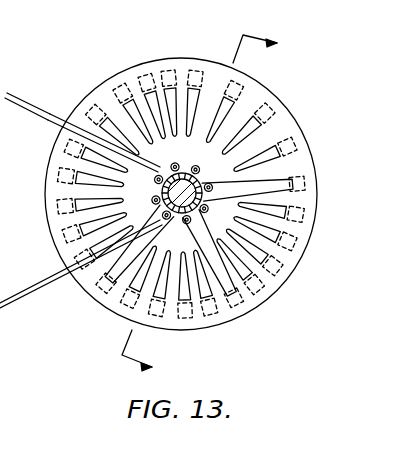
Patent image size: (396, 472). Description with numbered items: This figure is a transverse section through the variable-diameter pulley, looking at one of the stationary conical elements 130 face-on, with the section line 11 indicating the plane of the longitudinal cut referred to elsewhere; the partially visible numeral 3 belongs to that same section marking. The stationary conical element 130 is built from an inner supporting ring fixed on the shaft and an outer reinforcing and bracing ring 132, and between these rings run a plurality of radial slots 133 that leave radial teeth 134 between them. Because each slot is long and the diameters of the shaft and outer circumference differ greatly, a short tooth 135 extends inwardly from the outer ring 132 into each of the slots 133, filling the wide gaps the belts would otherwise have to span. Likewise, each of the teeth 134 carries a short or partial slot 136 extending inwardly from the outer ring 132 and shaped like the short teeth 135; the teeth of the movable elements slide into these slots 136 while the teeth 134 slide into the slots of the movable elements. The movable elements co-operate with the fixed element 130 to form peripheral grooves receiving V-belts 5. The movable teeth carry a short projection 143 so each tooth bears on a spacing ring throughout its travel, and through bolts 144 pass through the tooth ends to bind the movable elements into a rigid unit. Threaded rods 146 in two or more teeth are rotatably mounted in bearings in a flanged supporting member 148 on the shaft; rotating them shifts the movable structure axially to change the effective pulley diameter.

The stationary conical element 130 is at (104, 79).
The outer reinforcing and bracing ring 132 is at (126, 80).
The radial slots 133 is at (205, 160).
The radial teeth 134 is at (236, 216).
The short tooth 135 is at (182, 172).
The short or partial slots 136 is at (176, 312).
The short projection 143 is at (112, 286).
The through bolts 144 is at (225, 196).
The threaded rods 146 is at (212, 178).
The flanged supporting member 148 is at (58, 148).
The V-belts 5 is at (8, 94).
The shaft 3 is at (81, 244).
The section line 11 is at (211, 208).